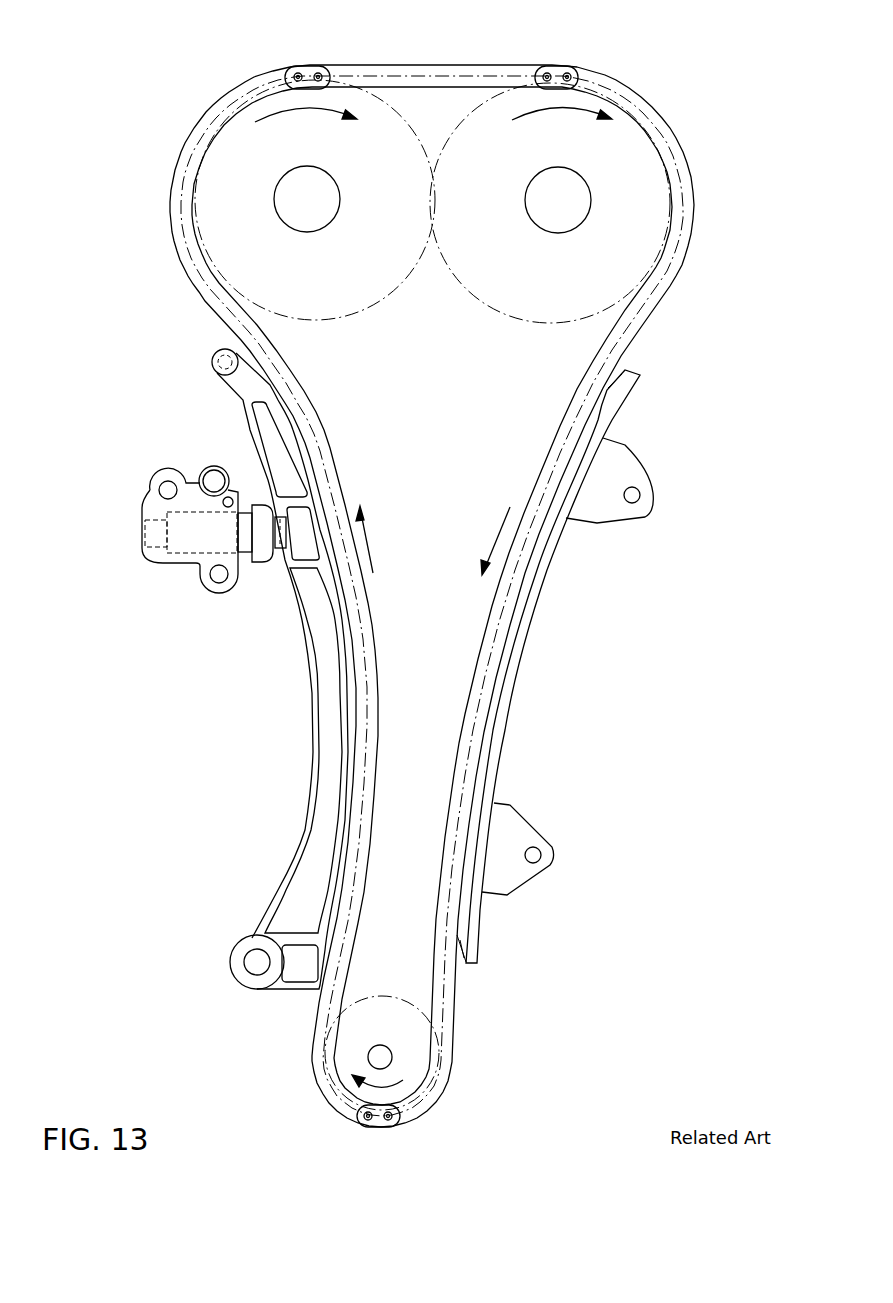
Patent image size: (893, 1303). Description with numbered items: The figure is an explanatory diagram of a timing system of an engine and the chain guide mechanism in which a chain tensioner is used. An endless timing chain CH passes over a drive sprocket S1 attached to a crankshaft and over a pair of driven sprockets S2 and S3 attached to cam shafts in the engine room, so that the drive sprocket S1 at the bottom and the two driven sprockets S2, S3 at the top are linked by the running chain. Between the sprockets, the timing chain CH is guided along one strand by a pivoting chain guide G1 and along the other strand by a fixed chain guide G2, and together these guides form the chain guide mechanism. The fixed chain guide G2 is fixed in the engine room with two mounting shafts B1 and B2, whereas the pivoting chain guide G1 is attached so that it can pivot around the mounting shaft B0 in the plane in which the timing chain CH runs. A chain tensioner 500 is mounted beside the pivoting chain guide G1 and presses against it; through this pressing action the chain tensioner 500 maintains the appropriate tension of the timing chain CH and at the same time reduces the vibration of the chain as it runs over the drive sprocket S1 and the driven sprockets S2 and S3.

The timing chain CH is at (627, 325).
The drive sprocket S1 is at (410, 1057).
The driven sprocket S2 is at (225, 193).
The driven sprocket S3 is at (622, 186).
The pivoting chain guide G1 is at (318, 855).
The fixed chain guide G2 is at (503, 713).
The mounting shaft B0 is at (244, 961).
The mounting shaft B1 is at (641, 495).
The mounting shaft B2 is at (545, 855).
The chain tensioner 500 is at (153, 508).